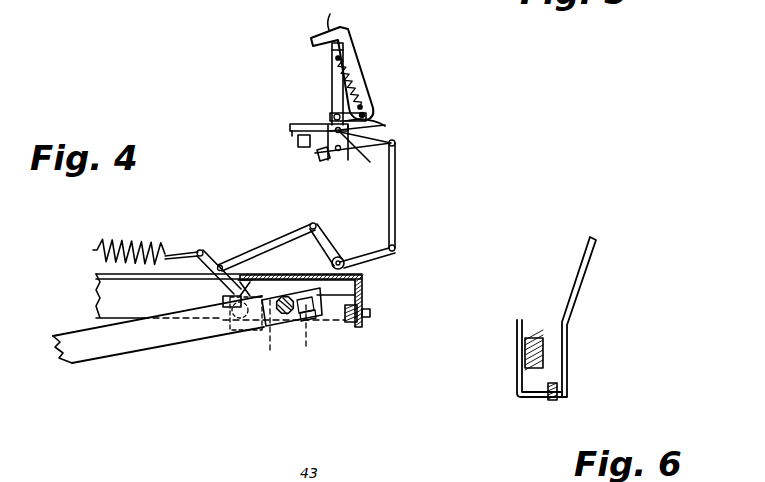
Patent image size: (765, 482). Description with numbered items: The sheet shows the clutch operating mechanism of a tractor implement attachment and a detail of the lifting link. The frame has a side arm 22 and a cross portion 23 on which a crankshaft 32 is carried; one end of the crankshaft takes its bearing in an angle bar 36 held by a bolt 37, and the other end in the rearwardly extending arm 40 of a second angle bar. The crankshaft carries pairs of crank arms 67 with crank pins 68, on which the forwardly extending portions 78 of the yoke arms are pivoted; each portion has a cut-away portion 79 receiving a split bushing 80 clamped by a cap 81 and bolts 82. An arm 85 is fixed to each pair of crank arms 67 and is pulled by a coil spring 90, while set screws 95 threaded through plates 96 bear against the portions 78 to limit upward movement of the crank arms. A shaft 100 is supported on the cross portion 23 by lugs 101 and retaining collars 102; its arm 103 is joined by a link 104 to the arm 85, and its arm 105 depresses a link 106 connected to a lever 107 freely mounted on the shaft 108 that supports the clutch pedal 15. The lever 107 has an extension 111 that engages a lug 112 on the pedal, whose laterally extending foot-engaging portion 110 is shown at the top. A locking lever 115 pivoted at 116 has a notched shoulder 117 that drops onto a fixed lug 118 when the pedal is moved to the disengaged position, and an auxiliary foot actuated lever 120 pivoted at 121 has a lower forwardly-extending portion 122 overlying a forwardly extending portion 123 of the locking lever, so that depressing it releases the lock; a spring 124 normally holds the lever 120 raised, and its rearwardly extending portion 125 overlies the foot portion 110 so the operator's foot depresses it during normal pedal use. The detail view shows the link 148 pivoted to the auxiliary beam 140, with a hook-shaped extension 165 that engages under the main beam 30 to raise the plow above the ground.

In FIG. 4, the clutch pedal 15 is at (332, 82).
In FIG. 4, the side arm 22 is at (96, 297).
In FIG. 4, the cross portion 23 is at (360, 292).
In FIG. 6, the implement supporting beam 30 is at (537, 336).
In FIG. 4, the crankshaft 32 is at (224, 328).
In FIG. 4, the angle bar 36 is at (366, 318).
In FIG. 4, the bolt 37 is at (366, 314).
In FIG. 4, the rearwardly extending arm 40 is at (338, 327).
In FIG. 4, the crank arms 67 is at (222, 299).
In FIG. 4, the crank pins 68 is at (290, 297).
In FIG. 4, the forwardly extending portions 78 is at (143, 340).
In FIG. 4, the cut-away portion 79 is at (240, 343).
In FIG. 4, the split bushing 80 is at (297, 318).
In FIG. 4, the cap 81 is at (318, 318).
In FIG. 4, the bolts 82 is at (269, 330).
In FIG. 4, the arm 85 is at (207, 251).
In FIG. 4, the coil spring 90 is at (140, 240).
In FIG. 4, the set screws 95 is at (222, 266).
In FIG. 4, the plates 96 is at (248, 293).
In FIG. 4, the shaft 100 is at (346, 264).
In FIG. 4, the lugs 101 is at (362, 280).
In FIG. 4, the retaining collars 102 is at (397, 250).
In FIG. 4, the arm 103 is at (330, 240).
In FIG. 4, the link 104 is at (280, 240).
In FIG. 4, the arm 105 is at (372, 254).
In FIG. 4, the link 106 is at (396, 197).
In FIG. 4, the lever 107 is at (368, 160).
In FIG. 4, the shaft 108 is at (336, 158).
In FIG. 4, the foot-engaging portion 110 is at (331, 46).
In FIG. 4, the extension 111 is at (318, 160).
In FIG. 4, the lug 112 is at (318, 152).
In FIG. 4, the locking lever 115 is at (300, 124).
In FIG. 4, the pivot 116 is at (395, 152).
In FIG. 4, the notched shoulder 117 is at (292, 128).
In FIG. 4, the lug 118 is at (300, 142).
In FIG. 4, the auxiliary foot actuated lever 120 is at (356, 62).
In FIG. 4, the pivot 121 is at (334, 115).
In FIG. 4, the forwardly-extending portion 122 is at (368, 119).
In FIG. 4, the forwardly extending portion 123 is at (382, 126).
In FIG. 4, the spring 124 is at (334, 61).
In FIG. 4, the rearwardly extending portion 125 is at (329, 15).
In FIG. 6, the auxiliary beam 140 is at (552, 400).
In FIG. 6, the link 148 is at (578, 285).
In FIG. 6, the hook-shaped extension 165 is at (517, 365).